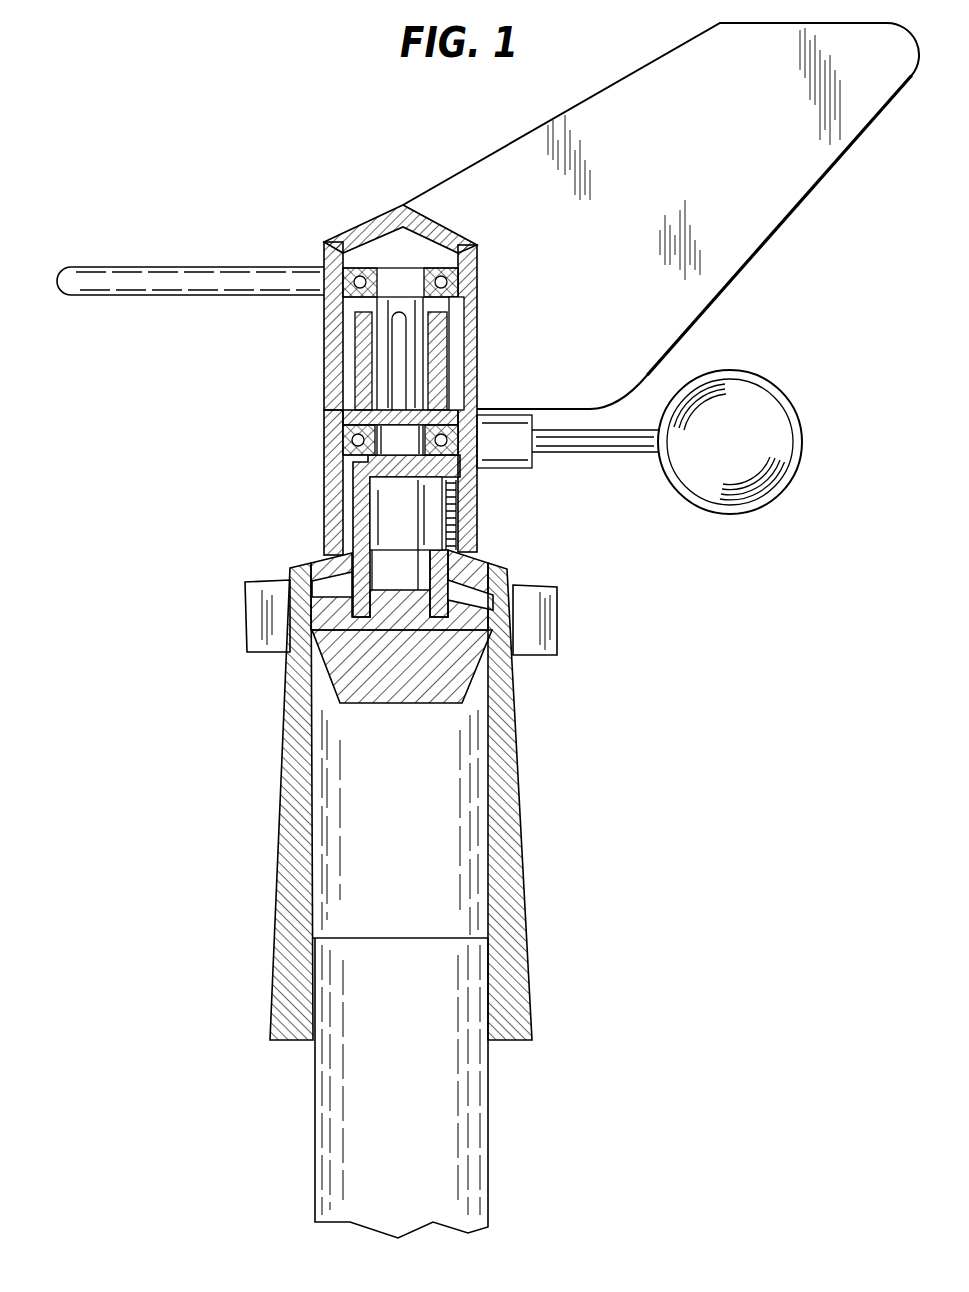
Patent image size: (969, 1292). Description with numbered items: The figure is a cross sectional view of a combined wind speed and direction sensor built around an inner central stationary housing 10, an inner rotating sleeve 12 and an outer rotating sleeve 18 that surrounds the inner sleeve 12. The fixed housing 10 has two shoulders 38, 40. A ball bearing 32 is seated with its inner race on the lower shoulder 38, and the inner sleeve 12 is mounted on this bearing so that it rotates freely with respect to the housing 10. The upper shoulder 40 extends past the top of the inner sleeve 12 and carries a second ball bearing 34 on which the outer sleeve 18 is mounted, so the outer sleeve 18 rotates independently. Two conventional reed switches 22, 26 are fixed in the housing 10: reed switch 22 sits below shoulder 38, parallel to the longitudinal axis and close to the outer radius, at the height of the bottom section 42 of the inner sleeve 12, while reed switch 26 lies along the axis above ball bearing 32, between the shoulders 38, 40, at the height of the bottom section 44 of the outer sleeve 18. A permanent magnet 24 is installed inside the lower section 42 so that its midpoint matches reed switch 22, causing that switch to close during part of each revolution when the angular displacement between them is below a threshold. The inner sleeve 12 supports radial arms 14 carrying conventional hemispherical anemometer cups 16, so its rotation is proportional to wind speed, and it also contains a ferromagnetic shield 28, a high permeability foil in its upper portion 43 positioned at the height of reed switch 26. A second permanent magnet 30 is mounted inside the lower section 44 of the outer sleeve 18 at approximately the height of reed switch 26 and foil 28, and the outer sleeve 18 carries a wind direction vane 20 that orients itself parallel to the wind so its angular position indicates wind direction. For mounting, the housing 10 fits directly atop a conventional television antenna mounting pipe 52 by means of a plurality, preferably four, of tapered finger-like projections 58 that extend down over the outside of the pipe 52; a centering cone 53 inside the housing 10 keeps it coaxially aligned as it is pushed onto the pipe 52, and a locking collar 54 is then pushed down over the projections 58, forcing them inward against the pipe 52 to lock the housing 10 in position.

The stationary housing 10 is at (322, 560).
The inner rotating sleeve 12 is at (477, 498).
The radial arms 14 is at (598, 452).
The anemometer cups 16 is at (787, 404).
The outer rotating sleeve 18 is at (350, 234).
The wind direction vane 20 is at (750, 203).
The reed switch 22 is at (432, 518).
The permanent magnet 24 is at (457, 522).
The reed switch 26 is at (420, 287).
The ferromagnetic shield 28 is at (438, 370).
The permanent magnet 30 is at (462, 332).
The ball bearing 32 is at (400, 439).
The ball bearing 34 is at (381, 280).
The shoulder 38 is at (365, 447).
The shoulder 40 is at (377, 296).
The bottom section of inner sleeve 42 is at (326, 487).
The upper portion of inner sleeve 43 is at (356, 384).
The bottom section of outer sleeve 44 is at (325, 344).
The antenna mounting pipe 52 is at (489, 1122).
The centering cone 53 is at (393, 703).
The locking collar 54 is at (245, 618).
The finger-like projections 58 is at (279, 826).